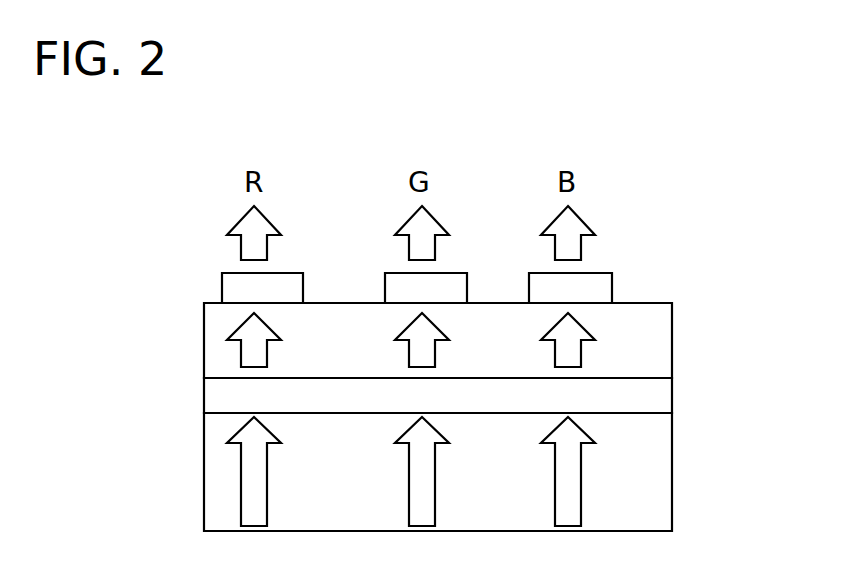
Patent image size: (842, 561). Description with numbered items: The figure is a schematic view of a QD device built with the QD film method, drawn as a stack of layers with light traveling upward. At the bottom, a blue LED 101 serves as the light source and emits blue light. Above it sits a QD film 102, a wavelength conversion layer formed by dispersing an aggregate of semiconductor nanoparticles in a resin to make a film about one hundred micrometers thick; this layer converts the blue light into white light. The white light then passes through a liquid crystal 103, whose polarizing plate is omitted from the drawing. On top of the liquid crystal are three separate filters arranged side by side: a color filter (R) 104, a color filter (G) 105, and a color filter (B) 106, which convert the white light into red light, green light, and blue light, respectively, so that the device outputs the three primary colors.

The blue LED 101 is at (222, 476).
The QD film 102 is at (232, 394).
The liquid crystal 103 is at (213, 356).
The color filter (R) 104 is at (239, 287).
The color filter (G) 105 is at (398, 278).
The color filter (B) 106 is at (595, 287).